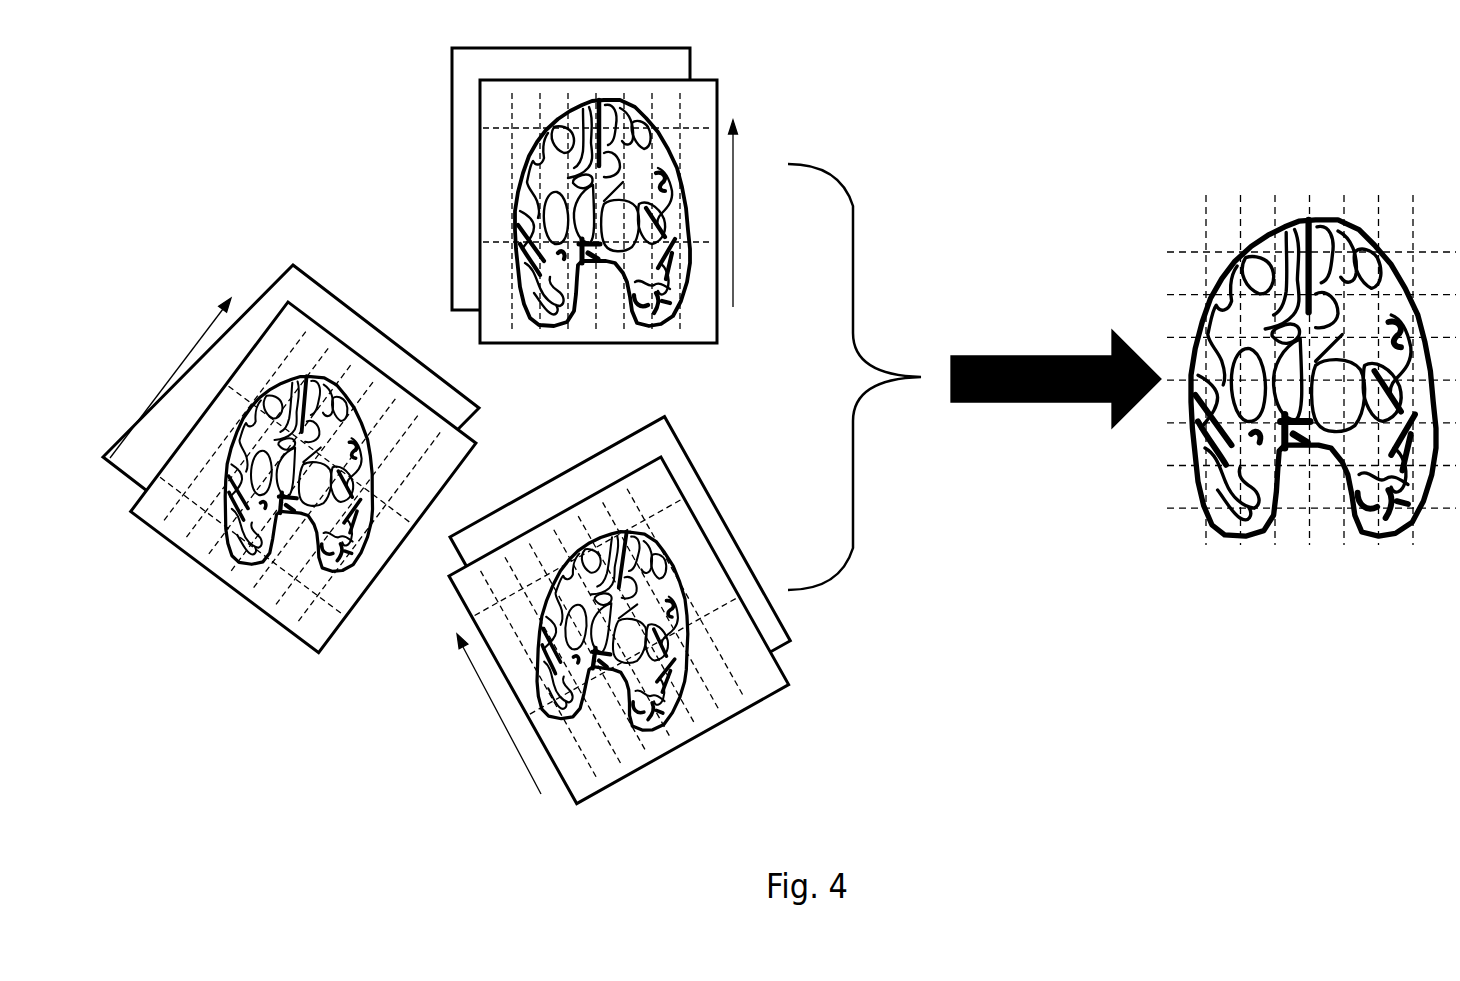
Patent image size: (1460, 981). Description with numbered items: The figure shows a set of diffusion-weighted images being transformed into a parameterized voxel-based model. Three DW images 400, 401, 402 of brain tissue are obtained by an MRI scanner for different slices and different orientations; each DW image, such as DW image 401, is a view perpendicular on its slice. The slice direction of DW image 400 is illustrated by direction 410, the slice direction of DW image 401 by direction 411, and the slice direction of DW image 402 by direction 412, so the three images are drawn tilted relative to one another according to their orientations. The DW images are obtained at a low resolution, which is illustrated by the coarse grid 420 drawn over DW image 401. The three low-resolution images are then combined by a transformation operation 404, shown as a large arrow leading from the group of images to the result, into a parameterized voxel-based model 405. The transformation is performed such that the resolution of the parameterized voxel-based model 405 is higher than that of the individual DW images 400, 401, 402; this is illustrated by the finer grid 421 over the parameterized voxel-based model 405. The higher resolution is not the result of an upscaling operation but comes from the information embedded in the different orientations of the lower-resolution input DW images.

The DW image 400 is at (269, 284).
The DW image 401 is at (480, 187).
The DW image 402 is at (626, 440).
The transformation operation 404 is at (1045, 355).
The parameterized voxel-based model 405 is at (1310, 142).
The direction 410 is at (110, 458).
The direction 411 is at (733, 307).
The direction 412 is at (540, 790).
The grid 420 is at (684, 100).
The grid 421 is at (1206, 210).